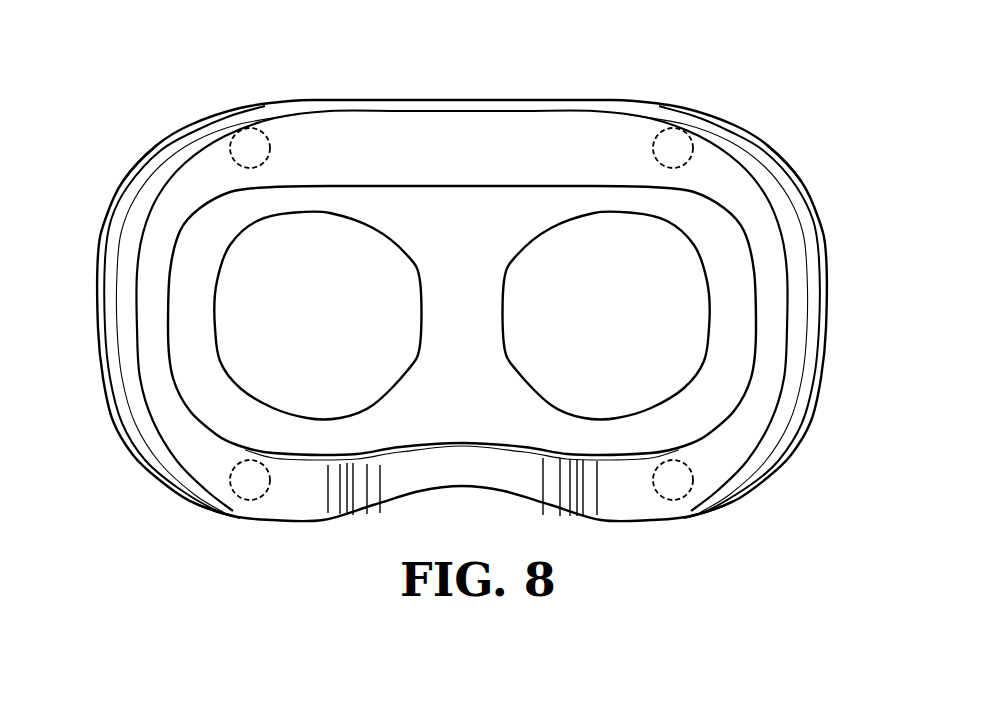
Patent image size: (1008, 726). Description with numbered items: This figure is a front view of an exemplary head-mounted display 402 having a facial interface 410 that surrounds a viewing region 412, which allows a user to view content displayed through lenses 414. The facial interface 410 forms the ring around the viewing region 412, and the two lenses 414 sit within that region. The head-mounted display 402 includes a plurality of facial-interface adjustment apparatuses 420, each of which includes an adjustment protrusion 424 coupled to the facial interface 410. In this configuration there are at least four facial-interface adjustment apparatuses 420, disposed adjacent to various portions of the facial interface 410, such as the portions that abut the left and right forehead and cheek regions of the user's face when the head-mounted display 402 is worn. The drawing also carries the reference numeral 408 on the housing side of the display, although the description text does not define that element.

The head-mounted display 402 is at (111, 130).
The housing 408 is at (817, 130).
The facial interface 410 is at (165, 490).
The viewing region 412 is at (744, 312).
The lenses 414 is at (350, 219).
The facial-interface adjustment apparatus 420 is at (241, 94).
The adjustment protrusion 424 is at (262, 134).